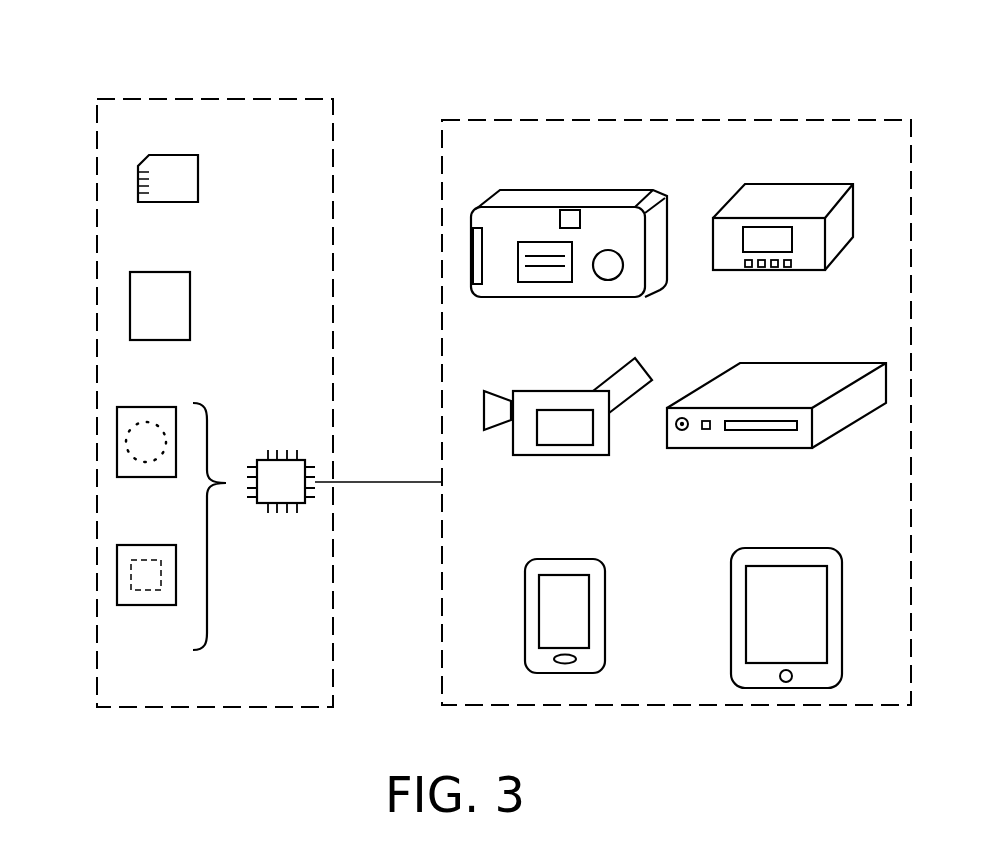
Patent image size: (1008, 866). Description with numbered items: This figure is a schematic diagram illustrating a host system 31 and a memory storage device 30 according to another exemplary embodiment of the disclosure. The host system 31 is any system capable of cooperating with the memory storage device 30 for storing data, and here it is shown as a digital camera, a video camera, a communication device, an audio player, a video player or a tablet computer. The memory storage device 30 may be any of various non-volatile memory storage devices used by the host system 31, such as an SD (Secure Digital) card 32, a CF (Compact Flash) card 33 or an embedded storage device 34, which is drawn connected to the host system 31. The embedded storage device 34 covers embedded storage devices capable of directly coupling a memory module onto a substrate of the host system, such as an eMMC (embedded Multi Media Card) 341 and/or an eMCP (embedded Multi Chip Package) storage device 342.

The memory storage device 30 is at (203, 99).
The host system 31 is at (602, 120).
The SD card 32 is at (138, 185).
The CF card 33 is at (130, 305).
The embedded storage device 34 is at (283, 455).
The eMMC 341 is at (117, 443).
The eMCP storage device 342 is at (117, 578).